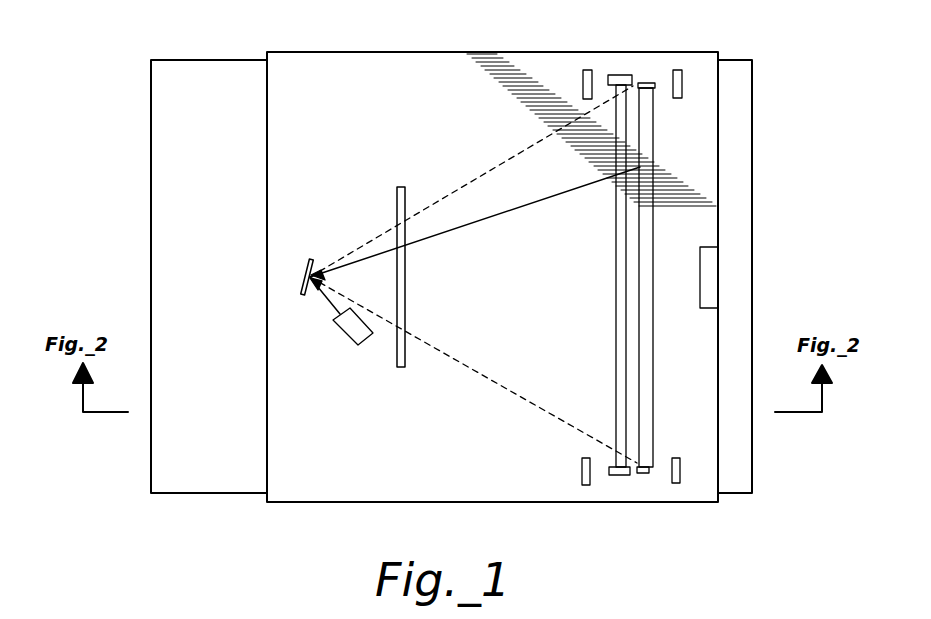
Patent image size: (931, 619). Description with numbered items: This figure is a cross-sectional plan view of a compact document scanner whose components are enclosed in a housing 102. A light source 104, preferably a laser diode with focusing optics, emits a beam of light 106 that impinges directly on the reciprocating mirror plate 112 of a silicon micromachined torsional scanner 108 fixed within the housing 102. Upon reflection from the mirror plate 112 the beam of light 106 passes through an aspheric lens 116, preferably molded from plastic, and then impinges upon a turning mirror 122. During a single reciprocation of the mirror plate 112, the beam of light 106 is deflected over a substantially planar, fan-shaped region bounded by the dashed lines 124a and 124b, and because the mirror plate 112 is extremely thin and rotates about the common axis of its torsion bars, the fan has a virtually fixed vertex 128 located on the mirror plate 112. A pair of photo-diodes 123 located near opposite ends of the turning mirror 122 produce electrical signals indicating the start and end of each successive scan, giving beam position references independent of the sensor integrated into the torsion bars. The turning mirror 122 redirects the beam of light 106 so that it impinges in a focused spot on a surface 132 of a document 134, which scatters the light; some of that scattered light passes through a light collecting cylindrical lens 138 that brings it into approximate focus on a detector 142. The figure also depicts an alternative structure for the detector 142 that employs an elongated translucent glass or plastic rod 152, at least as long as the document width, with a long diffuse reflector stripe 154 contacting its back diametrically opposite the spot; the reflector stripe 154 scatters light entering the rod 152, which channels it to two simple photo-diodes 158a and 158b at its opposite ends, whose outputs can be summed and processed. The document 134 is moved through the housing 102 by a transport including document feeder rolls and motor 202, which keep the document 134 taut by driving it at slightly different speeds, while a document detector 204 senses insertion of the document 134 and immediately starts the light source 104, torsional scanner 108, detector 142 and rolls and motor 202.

The housing 102 is at (352, 502).
The light source 104 is at (363, 343).
The beam of light 106 is at (325, 303).
The torsional scanner 108 is at (303, 263).
The mirror plate 112 is at (312, 260).
The aspheric lens 116 is at (405, 352).
The turning mirror 122 is at (655, 227).
The photo-diodes 123 is at (653, 84).
The dashed line 124a is at (495, 169).
The dashed line 124b is at (457, 357).
The vertex 128 is at (318, 276).
The surface 132 is at (177, 276).
The document 134 is at (752, 313).
The cylindrical lens 138 is at (627, 318).
The detector 142 is at (616, 290).
The rod 152 is at (613, 177).
The reflector stripe 154 is at (613, 212).
The photo-diode 158a is at (618, 74).
The photo-diode 158b is at (622, 476).
The rolls and motor 202 is at (583, 90).
The document detector 204 is at (700, 273).